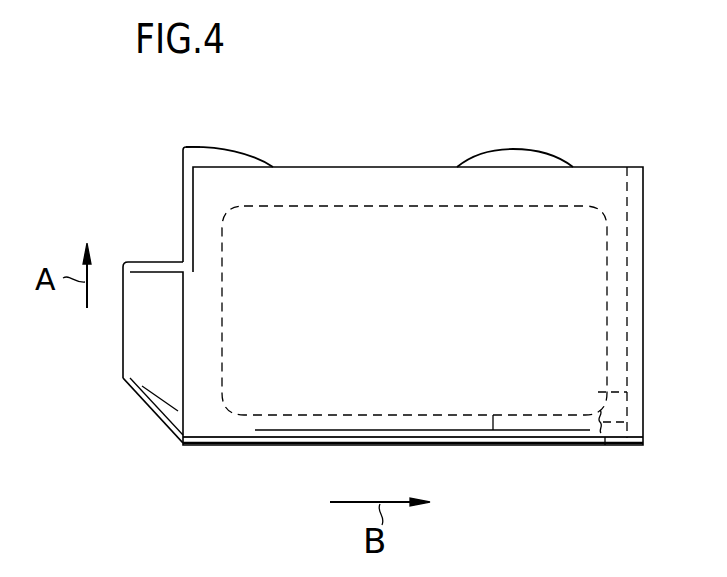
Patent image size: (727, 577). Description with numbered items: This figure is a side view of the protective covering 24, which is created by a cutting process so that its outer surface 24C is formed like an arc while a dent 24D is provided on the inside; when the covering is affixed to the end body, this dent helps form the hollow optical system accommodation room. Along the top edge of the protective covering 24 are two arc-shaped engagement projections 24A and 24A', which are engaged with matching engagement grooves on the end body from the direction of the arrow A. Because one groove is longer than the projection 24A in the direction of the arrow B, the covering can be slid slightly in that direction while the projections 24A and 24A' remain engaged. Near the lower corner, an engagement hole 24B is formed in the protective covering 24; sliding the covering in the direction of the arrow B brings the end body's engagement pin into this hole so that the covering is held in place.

The protective covering 24 is at (462, 108).
The engagement projection 24A is at (536, 129).
The engagement projection 24A' is at (249, 127).
The engagement hole 24B is at (610, 448).
The outer surface 24C is at (247, 427).
The dent 24D is at (488, 448).